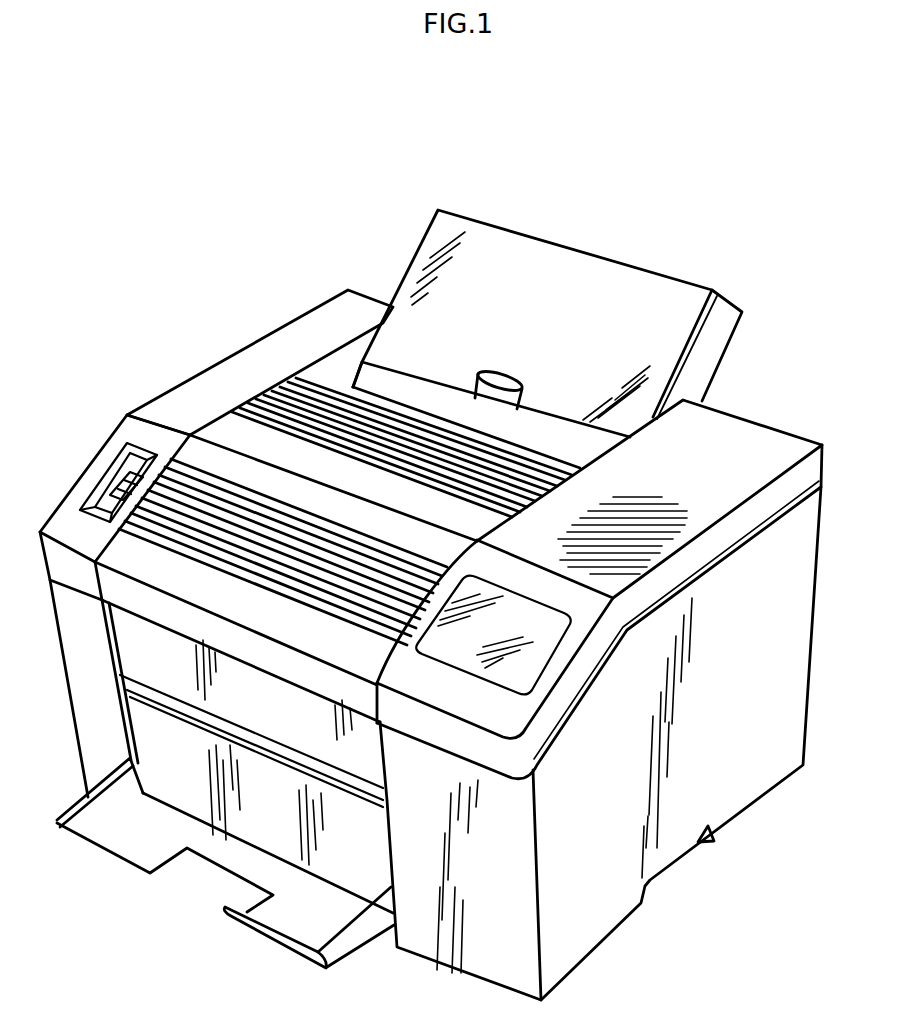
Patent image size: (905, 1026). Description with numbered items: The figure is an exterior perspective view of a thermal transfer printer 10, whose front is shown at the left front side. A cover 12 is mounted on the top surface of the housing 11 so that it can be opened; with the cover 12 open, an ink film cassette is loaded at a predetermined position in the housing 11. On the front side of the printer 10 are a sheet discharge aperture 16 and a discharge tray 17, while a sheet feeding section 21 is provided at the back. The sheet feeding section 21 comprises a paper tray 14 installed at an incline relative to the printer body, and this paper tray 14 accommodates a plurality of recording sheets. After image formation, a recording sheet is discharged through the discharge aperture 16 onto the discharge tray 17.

The thermal transfer printer 10 is at (83, 247).
The housing 11 is at (723, 778).
The cover 12 is at (210, 462).
The paper tray 14 is at (708, 350).
The sheet discharge aperture 16 is at (158, 712).
The discharge tray 17 is at (307, 923).
The sheet feeding section 21 is at (398, 257).